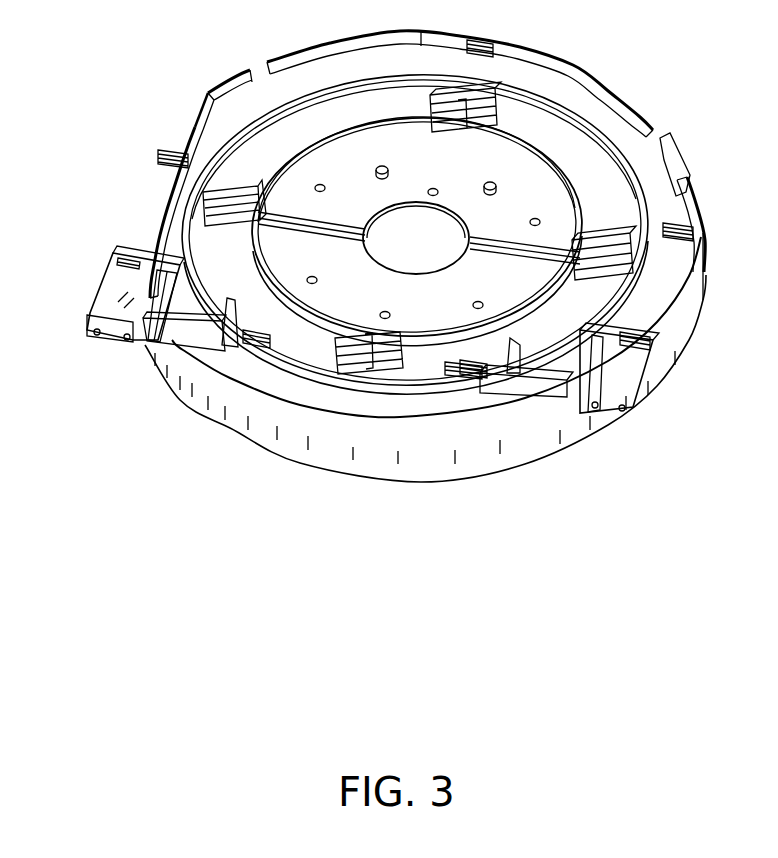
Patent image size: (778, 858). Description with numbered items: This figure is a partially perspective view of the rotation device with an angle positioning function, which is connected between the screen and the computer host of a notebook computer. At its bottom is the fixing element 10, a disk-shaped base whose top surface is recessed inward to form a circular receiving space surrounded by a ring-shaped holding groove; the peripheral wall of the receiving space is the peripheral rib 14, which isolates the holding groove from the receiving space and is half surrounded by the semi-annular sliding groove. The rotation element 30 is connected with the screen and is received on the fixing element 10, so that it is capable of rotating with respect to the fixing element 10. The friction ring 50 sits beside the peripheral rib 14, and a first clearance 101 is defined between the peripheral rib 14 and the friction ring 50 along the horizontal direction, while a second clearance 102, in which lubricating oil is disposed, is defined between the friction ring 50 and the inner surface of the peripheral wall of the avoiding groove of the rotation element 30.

The fixing element 10 is at (487, 448).
The peripheral rib 14 is at (573, 187).
The rotation element 30 is at (165, 242).
The friction ring 50 is at (523, 147).
The first clearance 101 is at (293, 152).
The second clearance 102 is at (350, 135).